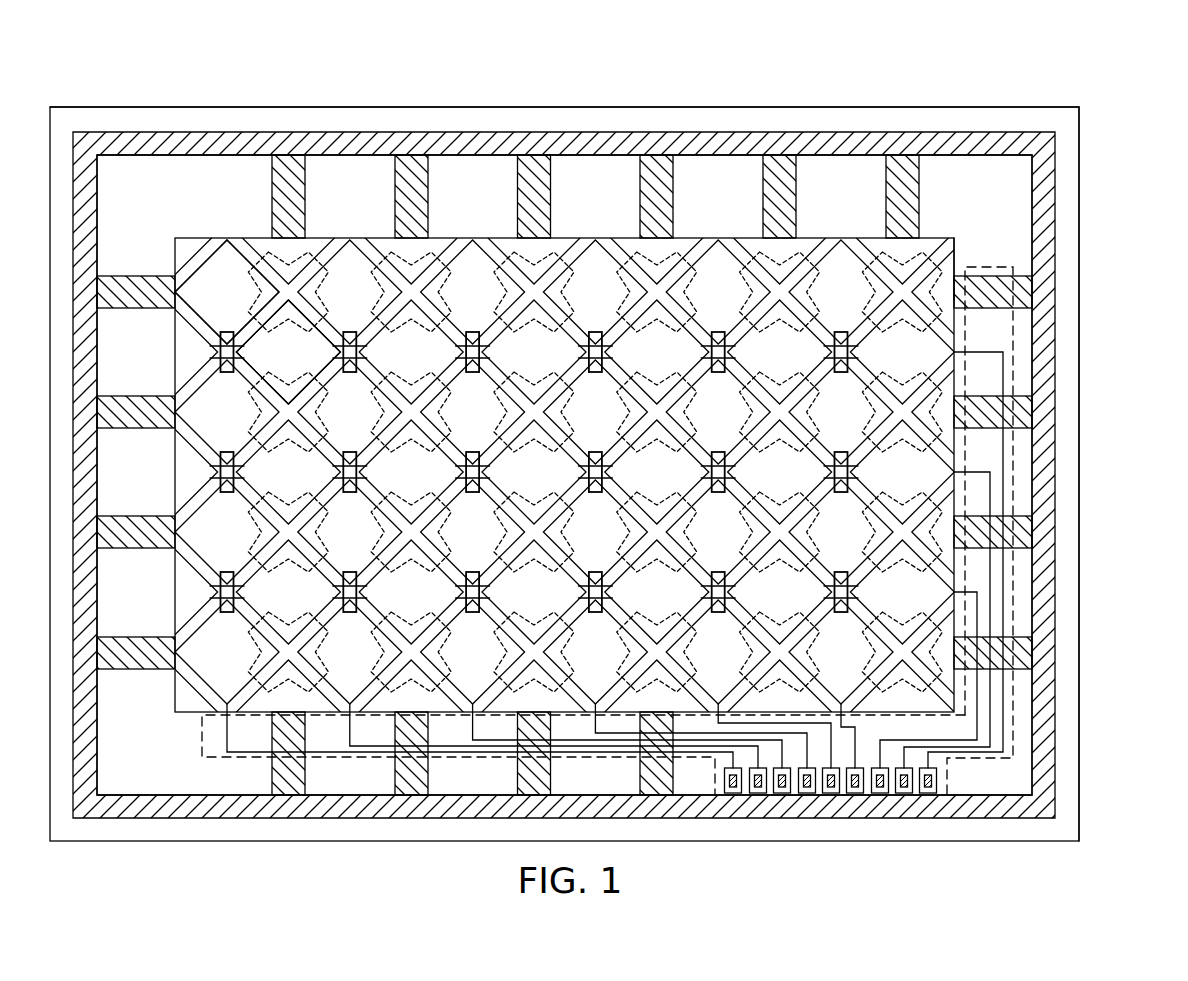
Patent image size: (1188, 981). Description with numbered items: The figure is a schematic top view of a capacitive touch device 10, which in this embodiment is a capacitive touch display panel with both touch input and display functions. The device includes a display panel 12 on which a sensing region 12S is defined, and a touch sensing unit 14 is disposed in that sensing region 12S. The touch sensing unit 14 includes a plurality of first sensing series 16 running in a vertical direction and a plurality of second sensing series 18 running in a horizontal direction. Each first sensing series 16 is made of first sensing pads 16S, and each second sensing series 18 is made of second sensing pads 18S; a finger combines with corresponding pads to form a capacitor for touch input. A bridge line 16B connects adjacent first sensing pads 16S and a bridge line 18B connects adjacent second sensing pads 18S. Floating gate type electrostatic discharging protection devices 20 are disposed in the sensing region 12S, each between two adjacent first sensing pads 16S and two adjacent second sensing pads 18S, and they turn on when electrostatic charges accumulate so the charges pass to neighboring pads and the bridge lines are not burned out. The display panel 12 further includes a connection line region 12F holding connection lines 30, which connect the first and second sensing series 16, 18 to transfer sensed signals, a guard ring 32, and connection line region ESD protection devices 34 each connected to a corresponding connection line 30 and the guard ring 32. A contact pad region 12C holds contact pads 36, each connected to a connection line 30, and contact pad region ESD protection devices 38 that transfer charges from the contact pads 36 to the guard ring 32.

The capacitive touch device 10 is at (1088, 101).
The display panel 12 is at (1080, 246).
The sensing region 12S is at (920, 238).
The connection line region 12F is at (988, 266).
The contact pad region 12C is at (715, 765).
The touch sensing unit 14 is at (158, 217).
The first sensing series 16 is at (595, 437).
The first sensing pads 16S is at (208, 301).
The bridge line 16B is at (221, 336).
The second sensing series 18 is at (528, 472).
The second sensing pads 18S is at (269, 361).
The bridge line 18B is at (365, 344).
The floating gate type electrostatic discharging protection device 20 is at (546, 250).
The connection lines 30 is at (1004, 726).
The guard ring 32 is at (1044, 320).
The connection line region ESD protection device 34 is at (271, 172).
The contact pads 36 is at (933, 795).
The contact pad region ESD protection devices 38 is at (947, 781).